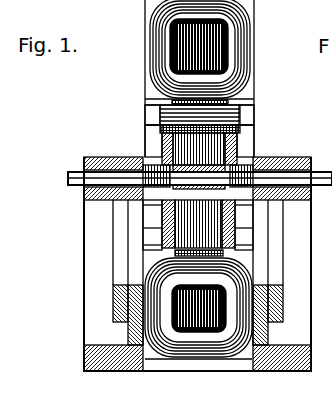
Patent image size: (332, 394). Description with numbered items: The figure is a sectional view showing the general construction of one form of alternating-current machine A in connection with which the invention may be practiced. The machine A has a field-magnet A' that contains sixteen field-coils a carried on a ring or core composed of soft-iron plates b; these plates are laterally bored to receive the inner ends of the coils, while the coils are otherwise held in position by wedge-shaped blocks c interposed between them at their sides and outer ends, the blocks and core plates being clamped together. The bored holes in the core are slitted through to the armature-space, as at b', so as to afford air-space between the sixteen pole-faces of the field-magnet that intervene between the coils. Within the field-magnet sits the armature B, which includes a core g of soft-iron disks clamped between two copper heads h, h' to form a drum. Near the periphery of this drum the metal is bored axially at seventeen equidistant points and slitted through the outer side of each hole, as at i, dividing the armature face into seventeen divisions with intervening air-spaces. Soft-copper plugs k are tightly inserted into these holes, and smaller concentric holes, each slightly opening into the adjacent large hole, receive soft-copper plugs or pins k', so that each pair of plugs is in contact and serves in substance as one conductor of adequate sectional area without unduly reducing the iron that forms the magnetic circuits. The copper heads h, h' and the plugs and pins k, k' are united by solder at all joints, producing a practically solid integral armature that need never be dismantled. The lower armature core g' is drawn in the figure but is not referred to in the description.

The field-coils a is at (238, 42).
The field-magnet A' is at (227, 46).
The machine A is at (172, 144).
The armature B is at (198, 228).
The soft-iron plates b is at (198, 307).
The slits b' is at (192, 177).
The wedge-shaped blocks c is at (145, 4).
The armature core g is at (199, 149).
The lower armature core g' is at (198, 228).
The copper head h is at (200, 171).
The copper head h' is at (264, 141).
The slits i is at (243, 99).
The soft-copper plugs k is at (200, 119).
The soft-copper pins k' is at (153, 141).